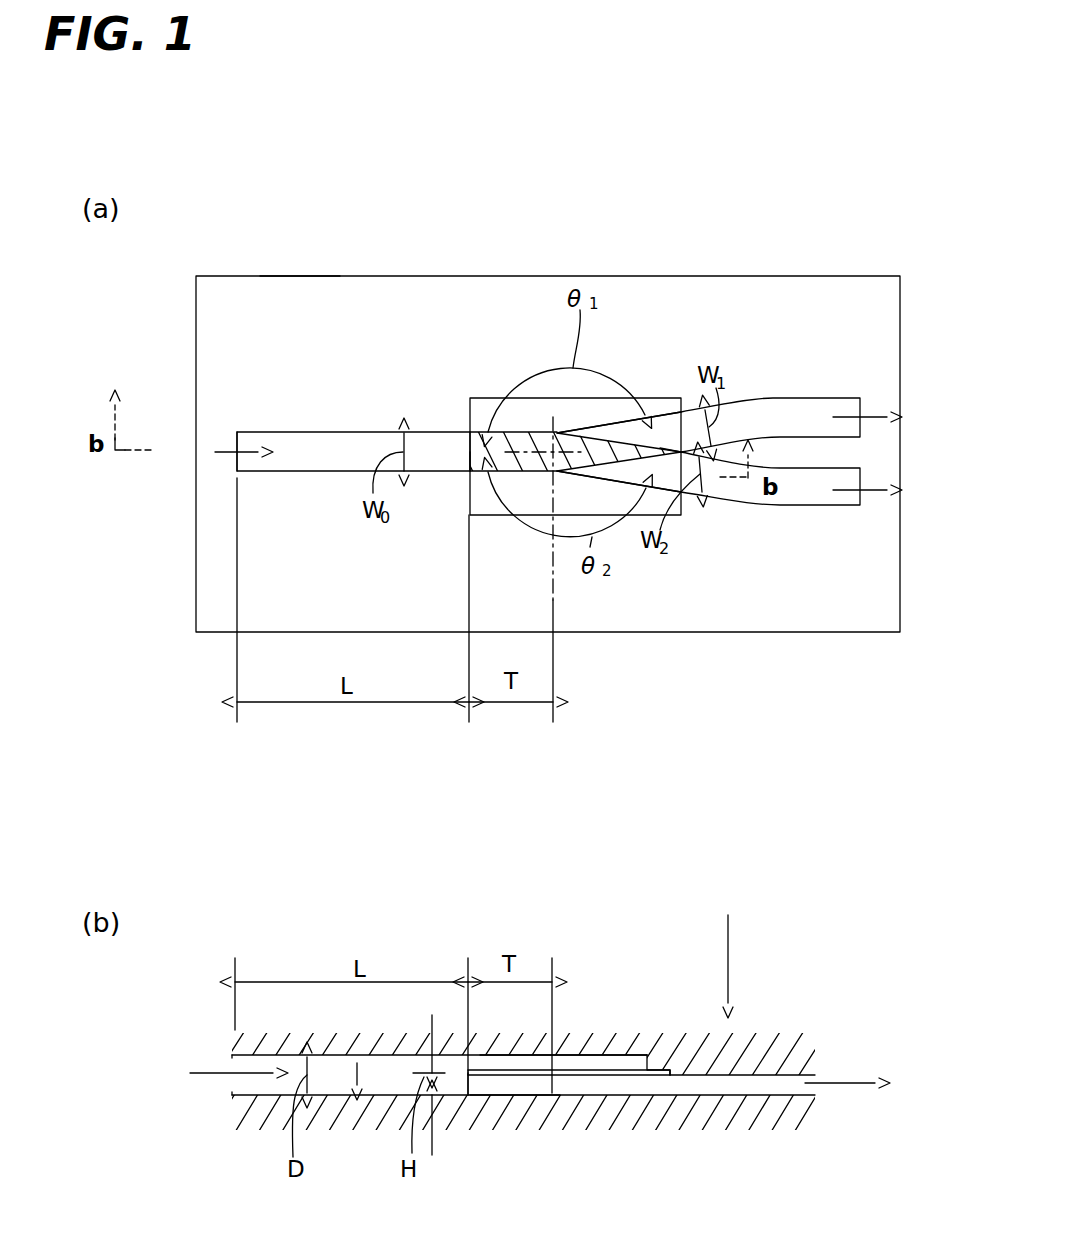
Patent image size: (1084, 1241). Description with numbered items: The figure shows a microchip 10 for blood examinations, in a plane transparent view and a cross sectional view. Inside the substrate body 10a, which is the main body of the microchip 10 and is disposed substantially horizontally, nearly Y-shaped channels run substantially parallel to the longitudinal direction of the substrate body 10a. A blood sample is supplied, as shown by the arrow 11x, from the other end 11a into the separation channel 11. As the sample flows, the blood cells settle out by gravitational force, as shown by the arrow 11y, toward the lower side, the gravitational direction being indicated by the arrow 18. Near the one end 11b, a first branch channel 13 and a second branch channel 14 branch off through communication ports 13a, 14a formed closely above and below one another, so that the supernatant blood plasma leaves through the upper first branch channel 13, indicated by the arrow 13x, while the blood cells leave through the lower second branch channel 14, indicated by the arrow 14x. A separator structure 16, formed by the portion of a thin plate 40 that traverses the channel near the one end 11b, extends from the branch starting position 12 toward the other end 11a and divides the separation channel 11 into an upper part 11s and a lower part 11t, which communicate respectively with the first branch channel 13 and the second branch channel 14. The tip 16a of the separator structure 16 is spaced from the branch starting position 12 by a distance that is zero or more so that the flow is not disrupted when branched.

The microchip 10 is at (843, 263).
The substrate body 10a is at (298, 290).
The separation channel 11 is at (324, 442).
The other end 11a is at (237, 448).
The one end 11b is at (663, 448).
The arrow 11x is at (225, 452).
The arrow 11y is at (358, 1066).
The part 11s is at (525, 1067).
The part 11t is at (505, 1087).
The branch starting position 12 is at (534, 431).
The first branch channel 13 is at (748, 412).
The communication port 13a is at (607, 418).
The output flow of first branch channel 13x is at (867, 407).
The second branch channel 14 is at (716, 484).
The communication port 14a is at (607, 482).
The output flow of second branch channel 14x is at (867, 507).
The separator structure 16 is at (477, 446).
The tip 16a is at (467, 457).
The arrow 18 is at (735, 945).
The thin plate 40 is at (486, 397).